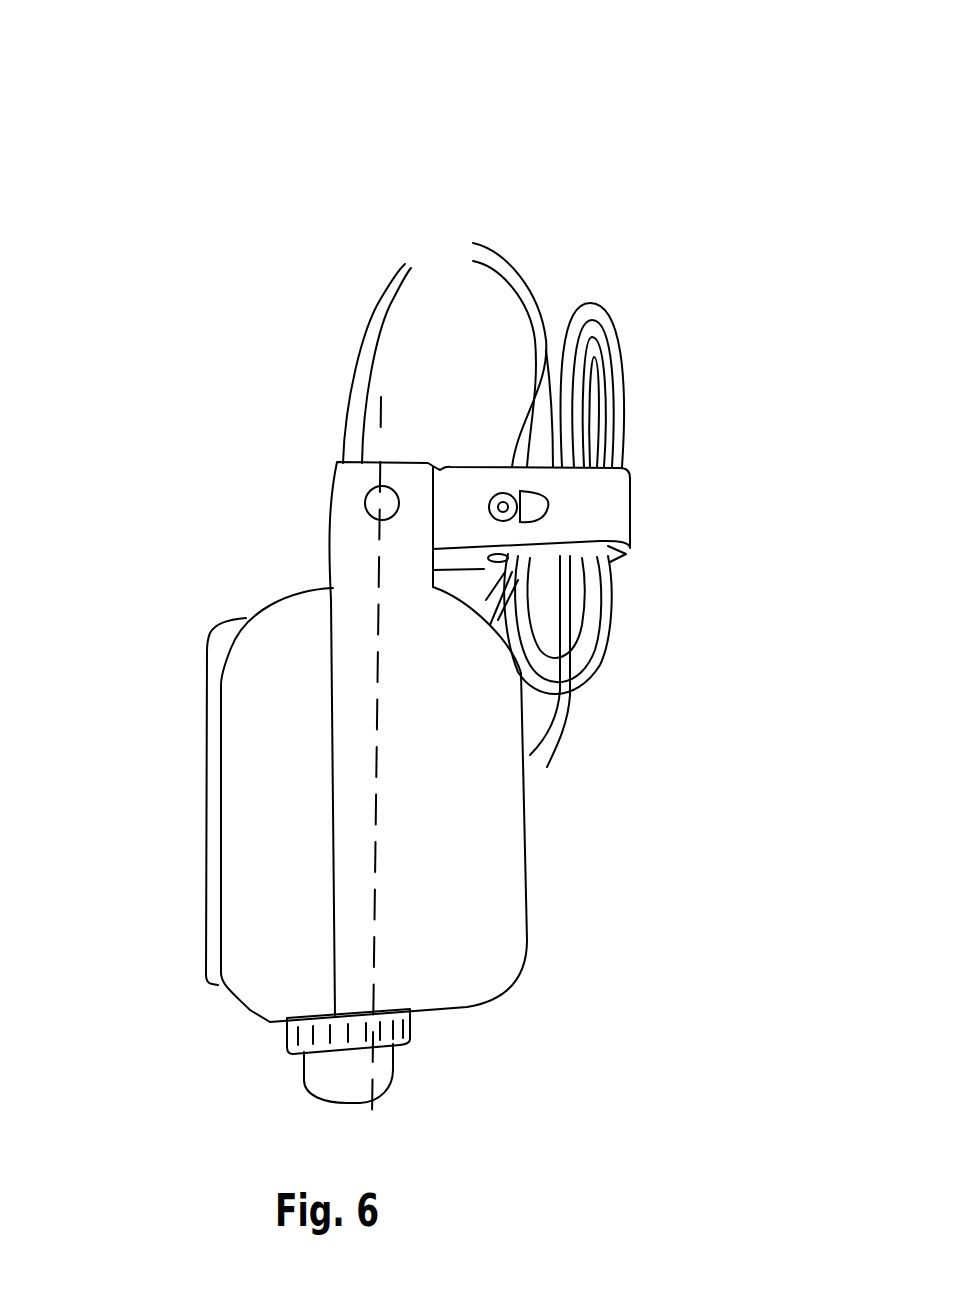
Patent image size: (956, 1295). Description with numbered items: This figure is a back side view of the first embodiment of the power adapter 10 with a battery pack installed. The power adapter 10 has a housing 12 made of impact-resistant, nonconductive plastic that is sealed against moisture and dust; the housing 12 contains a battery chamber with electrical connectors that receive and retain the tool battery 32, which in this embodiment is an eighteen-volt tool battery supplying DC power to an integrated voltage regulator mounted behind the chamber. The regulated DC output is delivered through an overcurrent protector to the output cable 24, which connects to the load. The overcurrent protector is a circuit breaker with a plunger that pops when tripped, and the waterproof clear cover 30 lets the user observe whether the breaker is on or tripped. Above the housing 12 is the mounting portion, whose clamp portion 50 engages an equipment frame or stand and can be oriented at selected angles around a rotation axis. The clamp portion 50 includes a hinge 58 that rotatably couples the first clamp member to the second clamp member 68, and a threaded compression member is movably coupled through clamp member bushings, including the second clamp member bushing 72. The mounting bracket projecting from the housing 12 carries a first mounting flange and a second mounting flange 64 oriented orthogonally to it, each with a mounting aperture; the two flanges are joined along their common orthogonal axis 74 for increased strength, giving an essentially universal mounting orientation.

The power adapter 10 is at (240, 183).
The housing 12 is at (470, 913).
The output cable 24 is at (603, 650).
The waterproof clear cover 30 is at (347, 1078).
The tool battery 32 is at (217, 683).
The clamp portion 50 is at (630, 455).
The hinge 58 is at (453, 472).
The second mounting flange 64 is at (370, 487).
The second clamp member 68 is at (595, 512).
The second clamp member bushing 72 is at (505, 505).
The common orthogonal axis 74 is at (380, 397).